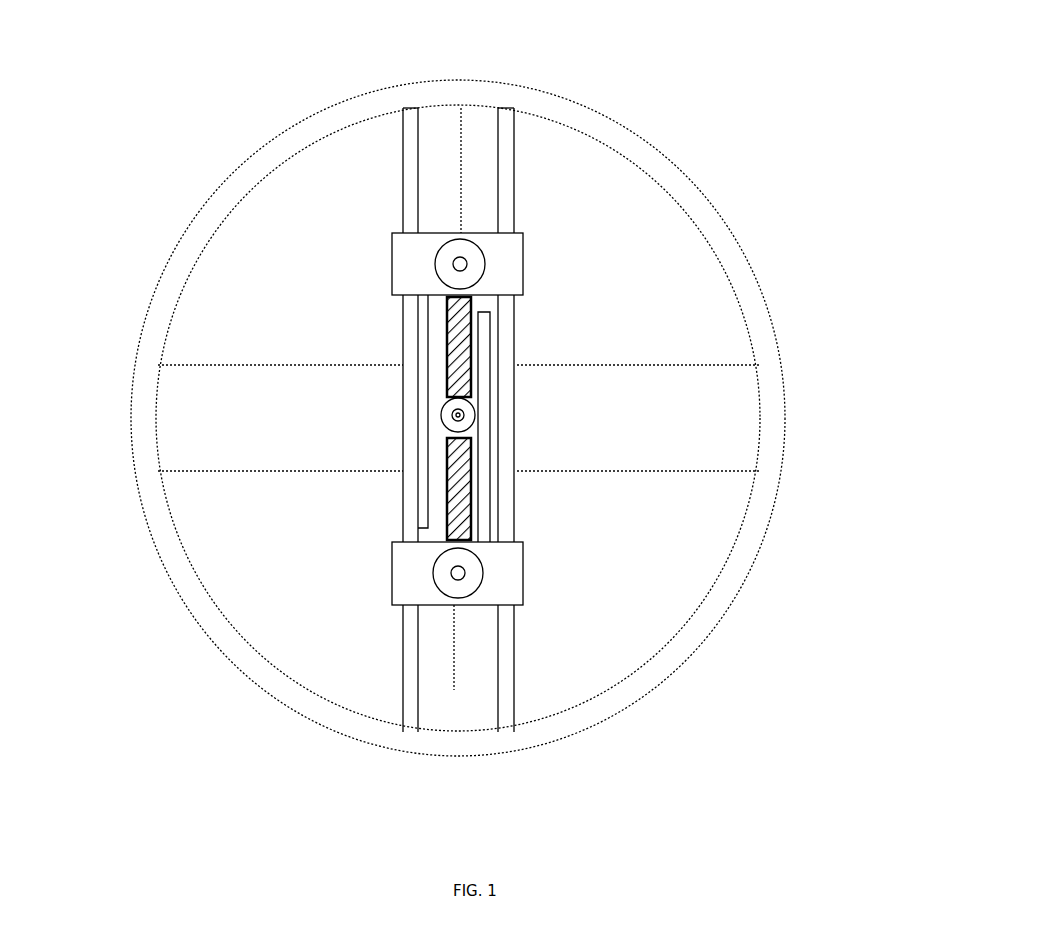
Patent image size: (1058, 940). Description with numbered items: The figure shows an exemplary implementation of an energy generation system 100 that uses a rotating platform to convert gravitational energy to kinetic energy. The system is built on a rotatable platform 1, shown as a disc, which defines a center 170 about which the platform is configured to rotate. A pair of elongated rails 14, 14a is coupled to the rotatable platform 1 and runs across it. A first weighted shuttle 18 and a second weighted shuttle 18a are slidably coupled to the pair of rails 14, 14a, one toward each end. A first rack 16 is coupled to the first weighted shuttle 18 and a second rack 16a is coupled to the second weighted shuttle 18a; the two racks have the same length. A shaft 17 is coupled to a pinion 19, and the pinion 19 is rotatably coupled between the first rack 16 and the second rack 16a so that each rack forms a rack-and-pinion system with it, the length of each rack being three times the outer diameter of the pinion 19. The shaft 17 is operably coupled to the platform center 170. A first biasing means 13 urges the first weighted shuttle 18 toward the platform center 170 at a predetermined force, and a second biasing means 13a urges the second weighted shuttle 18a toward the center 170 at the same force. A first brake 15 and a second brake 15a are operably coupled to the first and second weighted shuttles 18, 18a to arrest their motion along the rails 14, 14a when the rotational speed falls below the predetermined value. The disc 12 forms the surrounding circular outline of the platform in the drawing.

The energy generation system 100 is at (145, 593).
The rotatable platform 1 is at (479, 196).
The base disc 12 is at (690, 220).
The first biasing means 13 is at (470, 343).
The second biasing means 13a is at (453, 497).
The elongated rail 14 is at (403, 168).
The elongated rail 14a is at (508, 155).
The first brake 15 is at (393, 268).
The second brake 15a is at (525, 577).
The first rack 16 is at (423, 350).
The second rack 16a is at (492, 501).
The shaft 17 is at (473, 407).
The center 170 is at (453, 417).
The first weighted shuttle 18 is at (461, 264).
The second weighted shuttle 18a is at (453, 573).
The pinion 19 is at (455, 410).